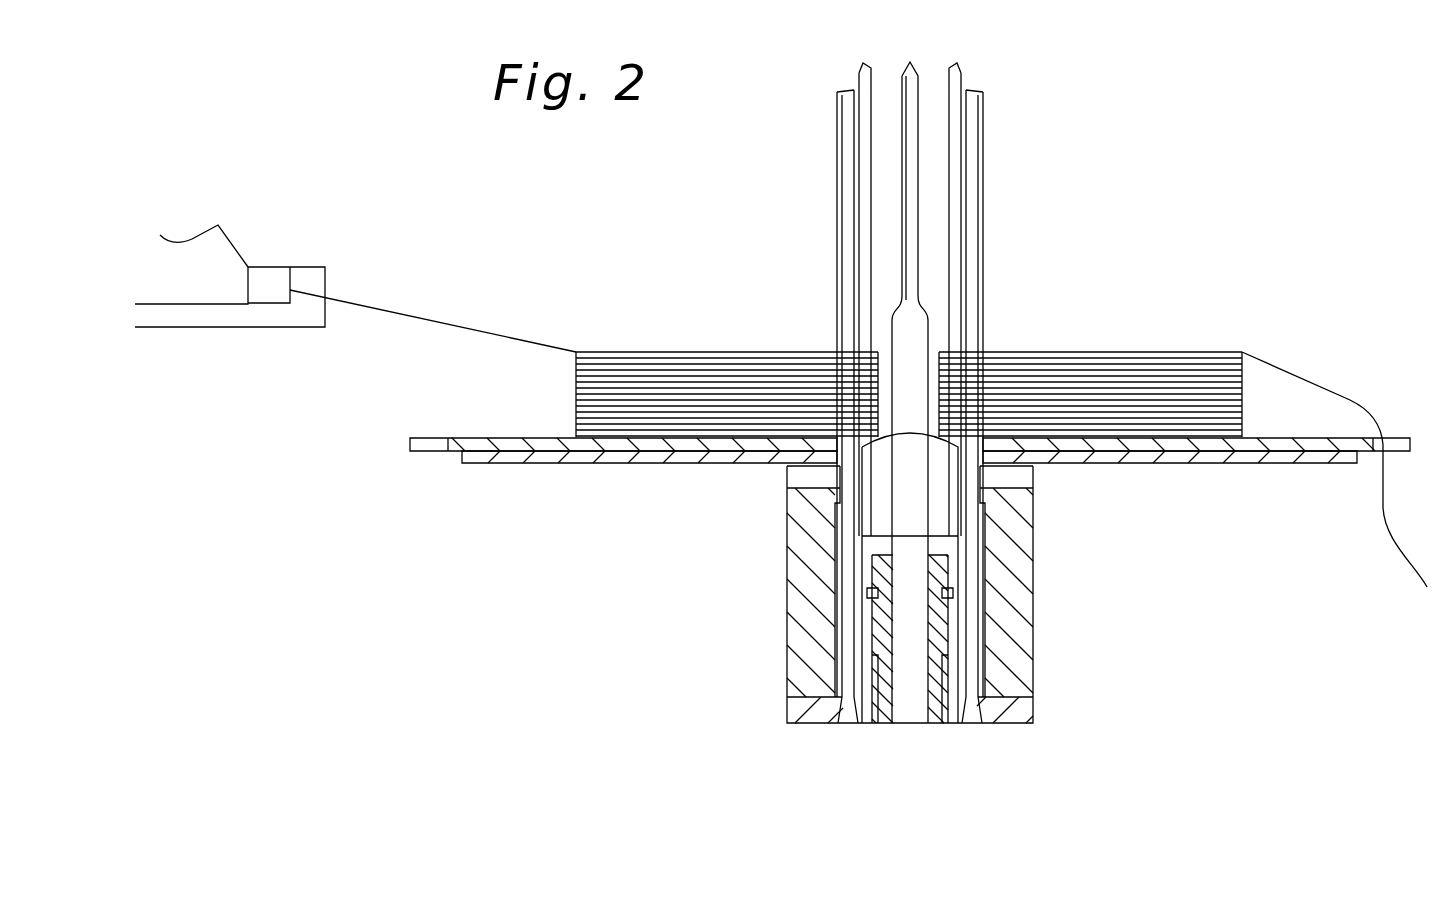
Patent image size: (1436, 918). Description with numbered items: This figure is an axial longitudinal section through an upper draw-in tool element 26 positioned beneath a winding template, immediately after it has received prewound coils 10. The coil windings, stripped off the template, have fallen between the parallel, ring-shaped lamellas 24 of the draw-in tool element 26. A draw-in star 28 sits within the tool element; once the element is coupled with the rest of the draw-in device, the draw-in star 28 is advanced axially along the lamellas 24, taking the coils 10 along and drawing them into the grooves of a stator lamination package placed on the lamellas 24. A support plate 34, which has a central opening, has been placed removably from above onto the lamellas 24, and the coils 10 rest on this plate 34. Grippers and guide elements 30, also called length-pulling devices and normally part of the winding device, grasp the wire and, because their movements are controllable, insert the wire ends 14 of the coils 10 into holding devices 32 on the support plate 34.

The coil 10 is at (673, 375).
The wire ends 14 is at (455, 327).
The lamellas 24 is at (952, 165).
The draw-in tool element 26 is at (793, 590).
The draw-in star 28 is at (933, 516).
The grippers and guide elements 30 is at (312, 278).
The holding devices 32 is at (423, 438).
The support plate 34 is at (504, 438).